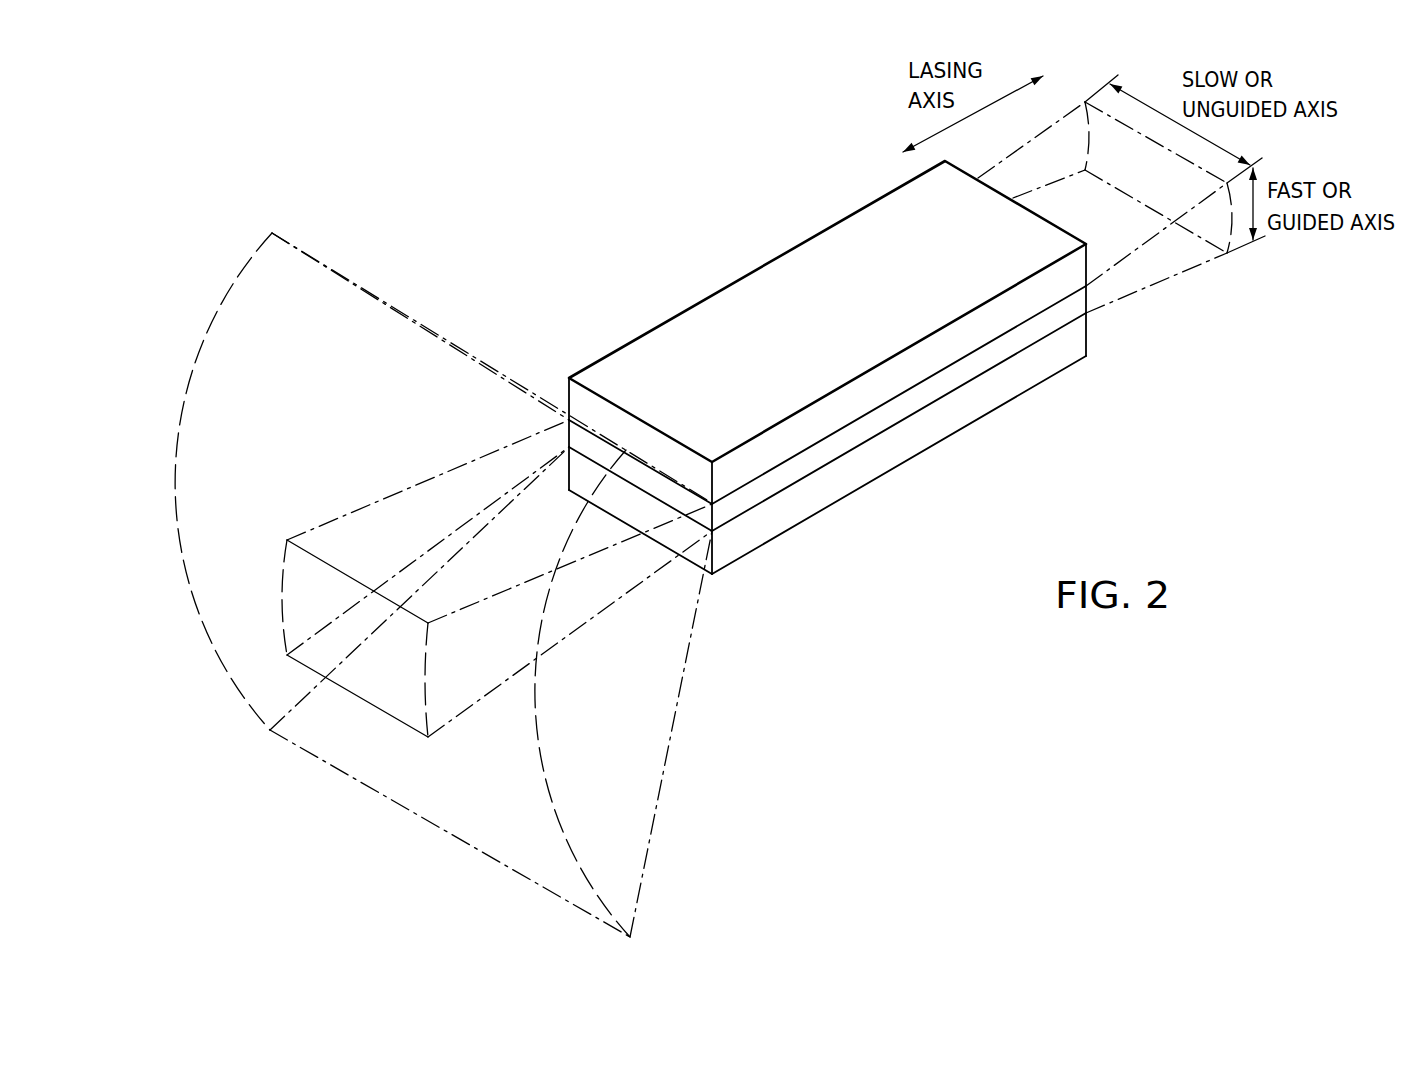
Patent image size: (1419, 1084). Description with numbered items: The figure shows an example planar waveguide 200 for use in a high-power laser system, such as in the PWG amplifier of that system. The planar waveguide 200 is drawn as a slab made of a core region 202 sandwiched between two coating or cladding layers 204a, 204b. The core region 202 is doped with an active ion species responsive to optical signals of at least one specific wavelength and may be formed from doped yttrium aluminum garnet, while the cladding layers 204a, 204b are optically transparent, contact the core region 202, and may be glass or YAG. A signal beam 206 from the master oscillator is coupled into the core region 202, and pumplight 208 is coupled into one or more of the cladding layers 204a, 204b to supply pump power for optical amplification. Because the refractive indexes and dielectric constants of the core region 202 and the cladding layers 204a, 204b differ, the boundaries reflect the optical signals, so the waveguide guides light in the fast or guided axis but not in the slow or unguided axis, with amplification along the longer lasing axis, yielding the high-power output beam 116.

The planar waveguide 200 is at (556, 197).
The coating or cladding layer 204a is at (767, 277).
The core region 202 is at (975, 357).
The coating or cladding layer 204b is at (814, 492).
The signal beam 206 is at (385, 497).
The pumplight 208 is at (212, 355).
The high-power output beam 116 is at (1147, 286).